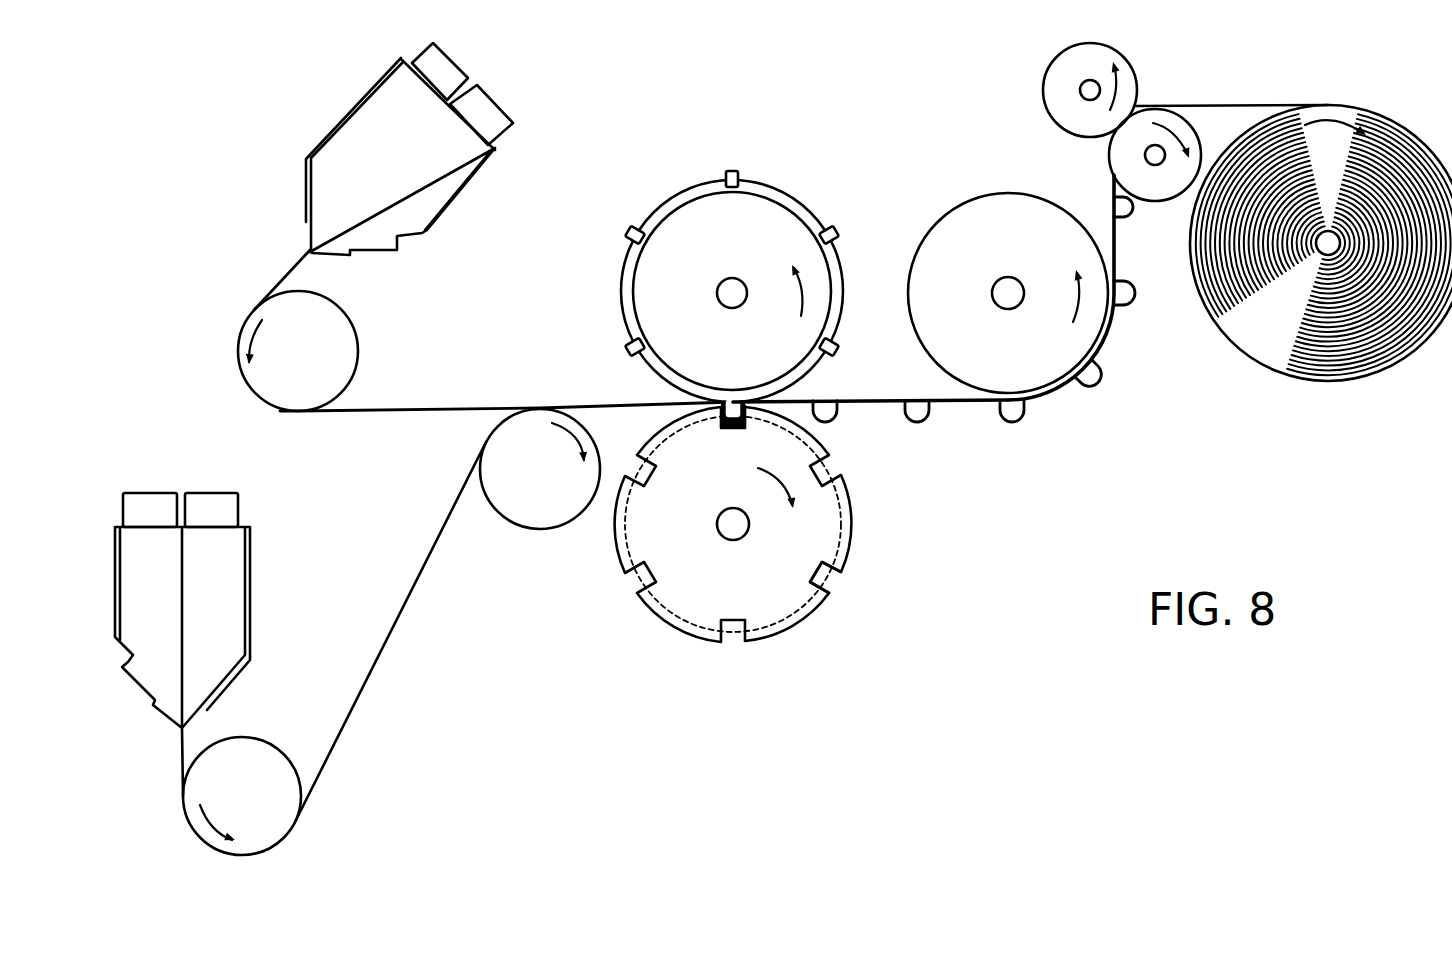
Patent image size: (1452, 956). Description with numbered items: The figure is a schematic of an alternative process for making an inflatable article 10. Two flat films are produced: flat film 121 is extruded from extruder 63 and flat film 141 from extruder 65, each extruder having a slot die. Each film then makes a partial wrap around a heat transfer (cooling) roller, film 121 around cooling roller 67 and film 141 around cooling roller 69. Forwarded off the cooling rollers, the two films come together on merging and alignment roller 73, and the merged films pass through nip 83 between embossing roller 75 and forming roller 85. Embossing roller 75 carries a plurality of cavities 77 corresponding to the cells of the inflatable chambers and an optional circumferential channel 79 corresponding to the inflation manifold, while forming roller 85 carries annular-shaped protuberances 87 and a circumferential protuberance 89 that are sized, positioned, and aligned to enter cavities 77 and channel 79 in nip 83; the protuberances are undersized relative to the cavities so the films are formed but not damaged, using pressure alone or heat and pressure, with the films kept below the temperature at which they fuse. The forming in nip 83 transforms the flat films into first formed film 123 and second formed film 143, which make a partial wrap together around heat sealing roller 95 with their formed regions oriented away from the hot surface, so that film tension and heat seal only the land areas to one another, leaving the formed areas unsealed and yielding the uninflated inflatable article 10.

The inflatable article 10 is at (1085, 190).
The extruder 63 is at (228, 578).
The extruder 65 is at (355, 138).
The heat transfer (cooling) roller 67 is at (337, 330).
The heat transfer (cooling) roller 69 is at (262, 752).
The merging and alignment roller 73 is at (540, 508).
The embossing roller 75 is at (762, 535).
The cavities 77 is at (825, 576).
The circumferential channel 79 is at (845, 523).
The nip 83 is at (705, 400).
The forming roller 85 is at (698, 261).
The annular-shaped protuberances 87 is at (622, 232).
The circumferential protuberance 89 is at (672, 197).
The heat sealing roller 95 is at (987, 217).
The flat film 121 is at (395, 405).
The first formed film 123 is at (878, 399).
The flat film 141 is at (372, 665).
The second formed film 143 is at (860, 401).